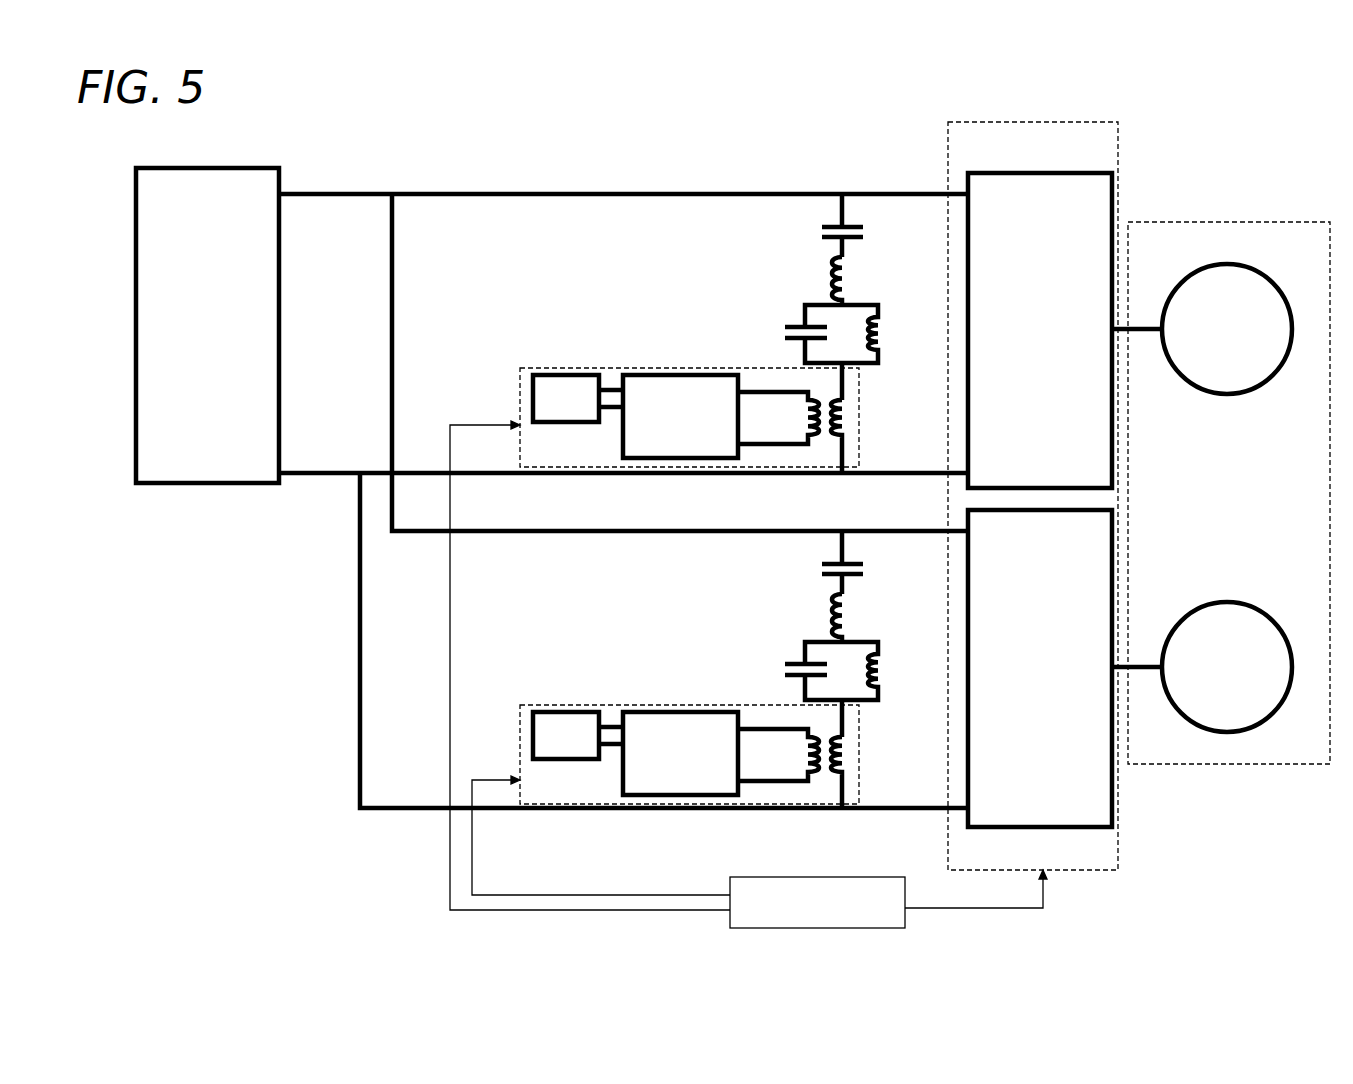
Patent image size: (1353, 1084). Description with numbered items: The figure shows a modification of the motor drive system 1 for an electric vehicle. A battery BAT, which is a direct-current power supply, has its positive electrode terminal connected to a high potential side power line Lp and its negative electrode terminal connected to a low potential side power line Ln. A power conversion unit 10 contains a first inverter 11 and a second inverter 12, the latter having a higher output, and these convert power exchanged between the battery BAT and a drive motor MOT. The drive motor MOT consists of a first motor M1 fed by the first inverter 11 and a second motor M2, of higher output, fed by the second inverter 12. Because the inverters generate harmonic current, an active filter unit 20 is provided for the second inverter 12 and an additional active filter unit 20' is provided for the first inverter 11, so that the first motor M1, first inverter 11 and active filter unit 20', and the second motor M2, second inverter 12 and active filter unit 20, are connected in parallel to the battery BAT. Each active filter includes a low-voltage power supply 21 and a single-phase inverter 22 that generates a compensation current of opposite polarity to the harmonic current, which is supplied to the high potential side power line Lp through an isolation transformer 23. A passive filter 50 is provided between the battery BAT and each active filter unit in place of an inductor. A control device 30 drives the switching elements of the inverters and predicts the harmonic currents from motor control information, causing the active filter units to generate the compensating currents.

The motor drive system 1 is at (648, 124).
The power conversion unit 10 is at (998, 122).
The first inverter 11 is at (1063, 172).
The second inverter 12 is at (1066, 832).
The active filter unit 20 is at (668, 754).
The active filter unit 20' is at (667, 417).
The low-voltage power supply 21 is at (578, 567).
The single-phase inverter 22 is at (680, 585).
The isolation transformer 23 is at (817, 438).
The control device 30 is at (868, 876).
The passive filter 50 is at (799, 250).
The battery BAT is at (235, 167).
The high potential side power line Lp is at (323, 192).
The low potential side power line Ln is at (325, 478).
The drive motor MOT is at (1262, 221).
The first motor M1 is at (1277, 286).
The second motor M2 is at (1277, 616).